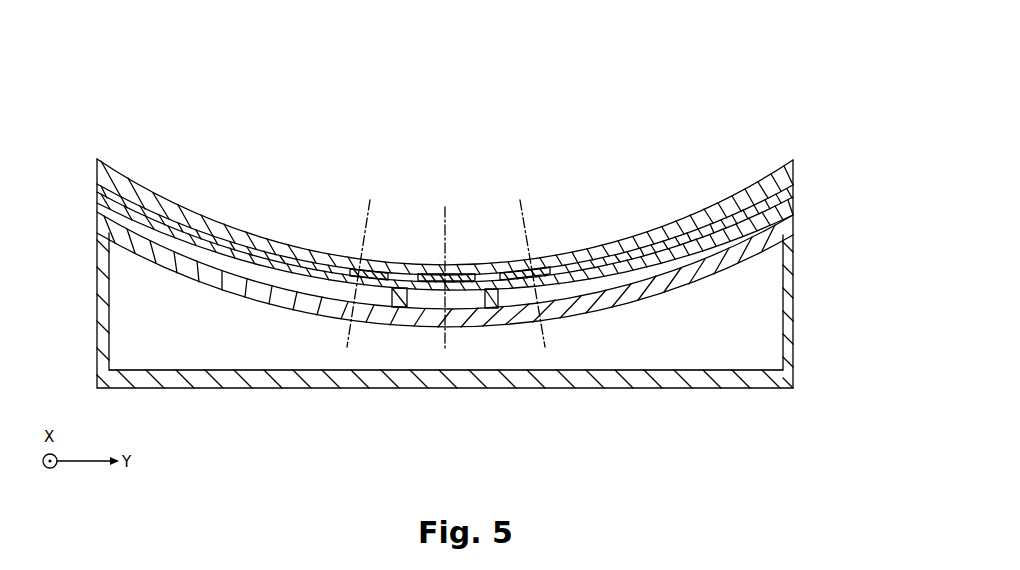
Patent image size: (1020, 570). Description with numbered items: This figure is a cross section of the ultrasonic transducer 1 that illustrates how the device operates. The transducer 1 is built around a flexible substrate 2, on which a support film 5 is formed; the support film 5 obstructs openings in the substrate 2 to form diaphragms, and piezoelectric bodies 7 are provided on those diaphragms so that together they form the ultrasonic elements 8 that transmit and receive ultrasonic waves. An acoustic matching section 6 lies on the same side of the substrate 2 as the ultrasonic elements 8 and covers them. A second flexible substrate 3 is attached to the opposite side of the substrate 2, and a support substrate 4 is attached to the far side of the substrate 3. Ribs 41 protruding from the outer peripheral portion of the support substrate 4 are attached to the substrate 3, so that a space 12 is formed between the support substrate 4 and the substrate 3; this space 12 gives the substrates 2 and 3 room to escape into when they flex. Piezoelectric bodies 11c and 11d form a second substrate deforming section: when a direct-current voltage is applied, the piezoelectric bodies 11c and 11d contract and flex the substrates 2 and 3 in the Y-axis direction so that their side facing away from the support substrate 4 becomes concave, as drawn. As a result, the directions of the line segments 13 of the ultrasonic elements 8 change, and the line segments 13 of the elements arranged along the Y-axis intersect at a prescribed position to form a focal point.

The ultrasonic transducer 1 is at (660, 74).
The substrate 2 is at (797, 205).
The substrate 3 is at (797, 226).
The support substrate 4 is at (552, 388).
The support film 5 is at (797, 187).
The acoustic matching section 6 is at (770, 188).
The piezoelectric body 7 is at (355, 269).
The ultrasonic element 8 is at (368, 265).
The piezoelectric body 11c is at (680, 237).
The piezoelectric body 11d is at (212, 233).
The space 12 is at (660, 347).
The line segment 13 is at (370, 205).
The rib 41 is at (797, 294).